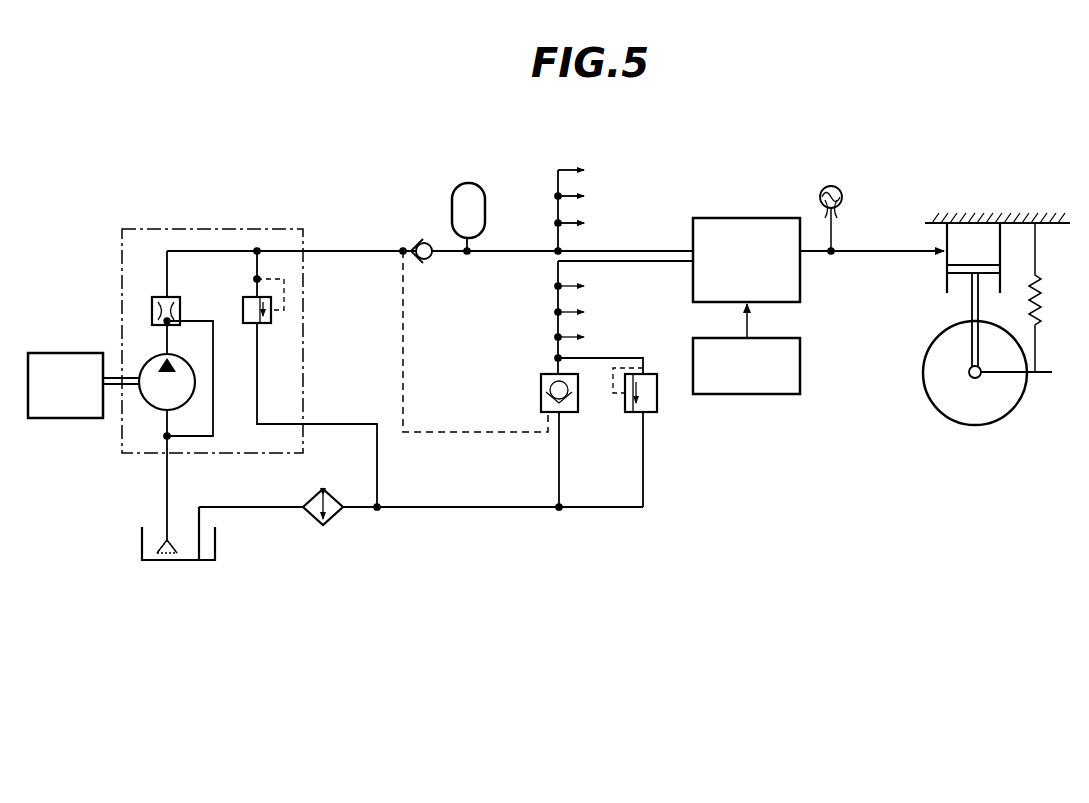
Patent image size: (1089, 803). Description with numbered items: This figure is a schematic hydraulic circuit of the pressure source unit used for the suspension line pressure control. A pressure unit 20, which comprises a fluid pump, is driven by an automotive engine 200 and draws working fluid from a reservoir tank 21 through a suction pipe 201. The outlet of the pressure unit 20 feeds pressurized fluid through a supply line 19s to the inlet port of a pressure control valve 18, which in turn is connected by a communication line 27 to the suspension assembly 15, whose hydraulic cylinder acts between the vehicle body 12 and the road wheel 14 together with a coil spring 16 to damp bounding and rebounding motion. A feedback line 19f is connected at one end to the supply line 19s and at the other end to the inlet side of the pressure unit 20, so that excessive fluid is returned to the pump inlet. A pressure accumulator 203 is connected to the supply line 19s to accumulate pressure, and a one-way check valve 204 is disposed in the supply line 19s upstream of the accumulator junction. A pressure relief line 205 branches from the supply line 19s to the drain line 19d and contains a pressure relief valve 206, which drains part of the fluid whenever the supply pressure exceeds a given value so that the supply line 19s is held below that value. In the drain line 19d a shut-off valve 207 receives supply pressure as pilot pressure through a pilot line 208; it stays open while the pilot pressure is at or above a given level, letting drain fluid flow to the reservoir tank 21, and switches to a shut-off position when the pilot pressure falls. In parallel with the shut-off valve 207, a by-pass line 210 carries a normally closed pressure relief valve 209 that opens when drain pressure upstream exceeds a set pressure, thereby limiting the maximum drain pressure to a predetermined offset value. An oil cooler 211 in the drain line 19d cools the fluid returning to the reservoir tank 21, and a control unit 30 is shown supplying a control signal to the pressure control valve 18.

The vehicle body 12 is at (1003, 220).
The road wheel 14 is at (975, 418).
The suspension assembly 15 is at (945, 268).
The coil spring 16 is at (1040, 308).
The pressure control valve 18 is at (738, 218).
The drain line 19d is at (500, 508).
The feedback line 19f is at (213, 356).
The supply line 19s is at (332, 250).
The pressure unit 20 is at (151, 398).
The reservoir tank 21 is at (140, 541).
The communication line 27 is at (822, 258).
The control unit 30 is at (757, 395).
The automotive engine 200 is at (65, 353).
The suction pipe 201 is at (167, 490).
The pressure accumulator 203 is at (487, 199).
The one-way check valve 204 is at (420, 243).
The pressure relief line 205 is at (257, 382).
The pressure relief valve 206 is at (271, 320).
The shut-off valve 207 is at (540, 403).
The pilot line 208 is at (405, 378).
The pressure relief valve 209 is at (657, 410).
The by-pass line 210 is at (643, 458).
The oil cooler 211 is at (333, 518).